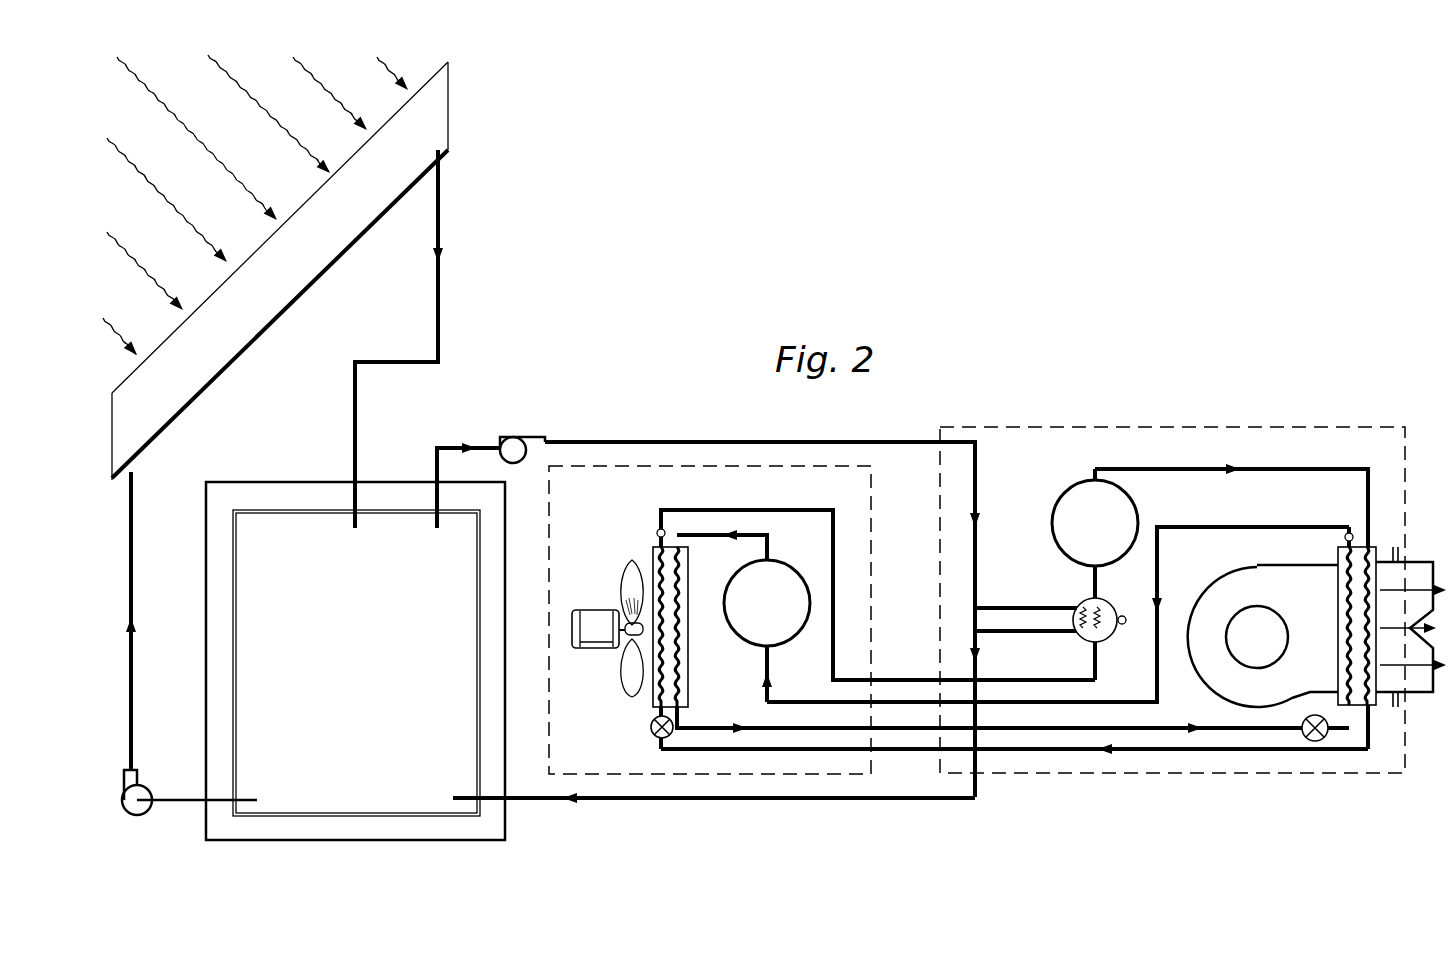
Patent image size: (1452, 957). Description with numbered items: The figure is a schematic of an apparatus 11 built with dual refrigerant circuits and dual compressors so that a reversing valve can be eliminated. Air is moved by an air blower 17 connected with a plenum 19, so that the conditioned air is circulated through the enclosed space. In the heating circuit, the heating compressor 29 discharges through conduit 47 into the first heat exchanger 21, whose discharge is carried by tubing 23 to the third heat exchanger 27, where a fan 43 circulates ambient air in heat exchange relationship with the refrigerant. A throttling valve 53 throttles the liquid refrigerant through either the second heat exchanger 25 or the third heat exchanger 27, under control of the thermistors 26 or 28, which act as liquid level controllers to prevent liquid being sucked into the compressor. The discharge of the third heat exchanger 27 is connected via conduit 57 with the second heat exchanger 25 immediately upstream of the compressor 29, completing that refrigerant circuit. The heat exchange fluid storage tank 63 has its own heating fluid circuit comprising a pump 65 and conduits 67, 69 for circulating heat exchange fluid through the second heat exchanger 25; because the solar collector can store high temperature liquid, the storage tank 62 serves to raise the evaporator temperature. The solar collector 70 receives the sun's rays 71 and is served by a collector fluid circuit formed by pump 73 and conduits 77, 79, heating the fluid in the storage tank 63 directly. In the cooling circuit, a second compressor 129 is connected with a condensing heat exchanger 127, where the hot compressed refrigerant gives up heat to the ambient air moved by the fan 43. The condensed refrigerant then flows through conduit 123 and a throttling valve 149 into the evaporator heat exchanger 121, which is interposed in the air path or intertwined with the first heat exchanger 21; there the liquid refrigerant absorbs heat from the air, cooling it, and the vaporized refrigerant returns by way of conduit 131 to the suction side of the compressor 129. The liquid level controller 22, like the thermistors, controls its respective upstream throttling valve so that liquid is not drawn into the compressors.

The apparatus 11 is at (998, 394).
The air blower 17 is at (1257, 622).
The plenum 19 is at (1415, 560).
The first heat exchanger 21 is at (1356, 546).
The liquid level controller 22 is at (1345, 533).
The tubing 23 is at (1122, 752).
The second heat exchanger 25 is at (1112, 640).
The thermistor 26 is at (1124, 615).
The third heat exchanger 27 is at (657, 545).
The thermistor 28 is at (659, 530).
The compressor 29 is at (1087, 499).
The fan 43 is at (627, 677).
The conduit 47 is at (1283, 470).
The throttling valve 53 is at (651, 730).
The conduit 57 is at (835, 550).
The storage tank 62 is at (383, 512).
The heat exchange fluid storage tank 63 is at (288, 520).
The pump 65 is at (508, 437).
The conduit 67 is at (788, 441).
The conduit 69 is at (757, 799).
The solar collector 70 is at (331, 267).
The suns rays 71 is at (190, 131).
The pump 73 is at (145, 791).
The conduit 77 is at (133, 555).
The return conduit 79 is at (440, 195).
The evaporator heat exchanger 121 is at (1343, 538).
The conduit 123 is at (1137, 728).
The condensing heat exchanger 127 is at (681, 567).
The second compressor 129 is at (774, 563).
The conduit 131 is at (1212, 527).
The throttling valve 149 is at (1326, 742).